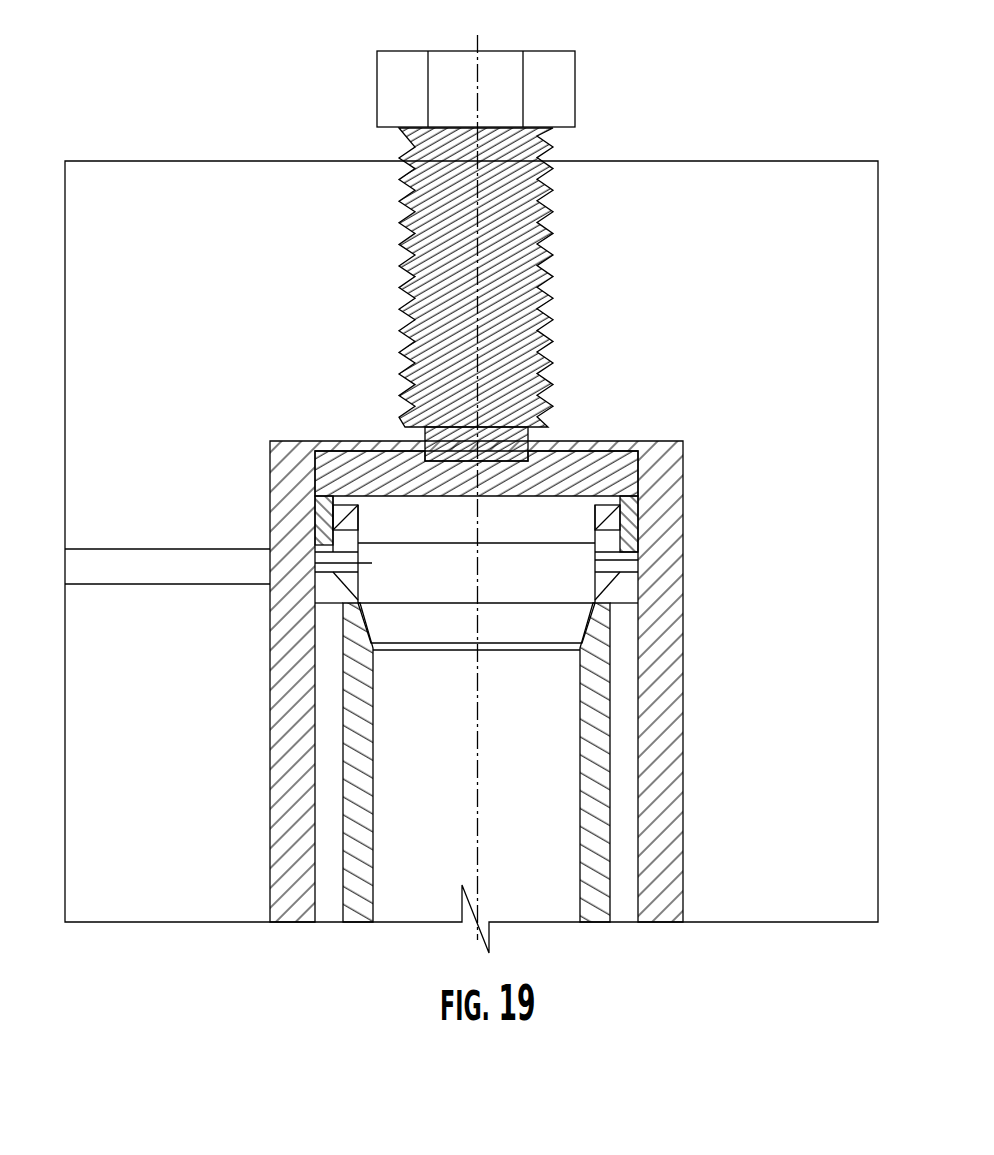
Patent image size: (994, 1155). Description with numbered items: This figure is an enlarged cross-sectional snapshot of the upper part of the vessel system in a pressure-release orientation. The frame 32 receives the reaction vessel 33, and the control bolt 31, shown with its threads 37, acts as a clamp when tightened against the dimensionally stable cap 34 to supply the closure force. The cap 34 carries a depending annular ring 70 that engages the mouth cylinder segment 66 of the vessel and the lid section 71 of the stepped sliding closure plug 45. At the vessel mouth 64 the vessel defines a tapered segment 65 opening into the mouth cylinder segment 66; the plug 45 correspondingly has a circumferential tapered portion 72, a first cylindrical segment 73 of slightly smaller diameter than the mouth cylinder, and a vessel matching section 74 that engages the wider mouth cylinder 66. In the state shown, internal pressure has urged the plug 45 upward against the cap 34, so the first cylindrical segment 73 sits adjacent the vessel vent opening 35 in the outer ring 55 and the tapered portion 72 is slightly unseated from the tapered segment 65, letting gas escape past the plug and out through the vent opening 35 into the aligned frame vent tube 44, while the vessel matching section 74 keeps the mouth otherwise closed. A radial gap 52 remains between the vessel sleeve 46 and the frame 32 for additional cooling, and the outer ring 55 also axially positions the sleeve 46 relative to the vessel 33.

The control bolt 31 is at (562, 88).
The frame 32 is at (791, 228).
The reaction vessel 33 is at (600, 688).
The dimensionally stable cap 34 is at (607, 467).
The vessel pressure vent opening 35 is at (317, 557).
The threads 37 is at (553, 285).
The frame vent tube 44 is at (178, 584).
The stepped sliding closure plug 45 is at (514, 668).
The vessel sleeve 46 is at (622, 752).
The radial gap 52 is at (658, 808).
The outer ring 55 is at (333, 585).
The vessel mouth 64 is at (466, 722).
The tapered segment 65 is at (600, 632).
The mouth cylinder segment 66 is at (600, 575).
The depending annular ring 70 is at (632, 532).
The lid section 71 is at (613, 500).
The circumferential tapered portion 72 is at (445, 635).
The first cylindrical segment 73 is at (447, 585).
The vessel matching section 74 is at (538, 529).